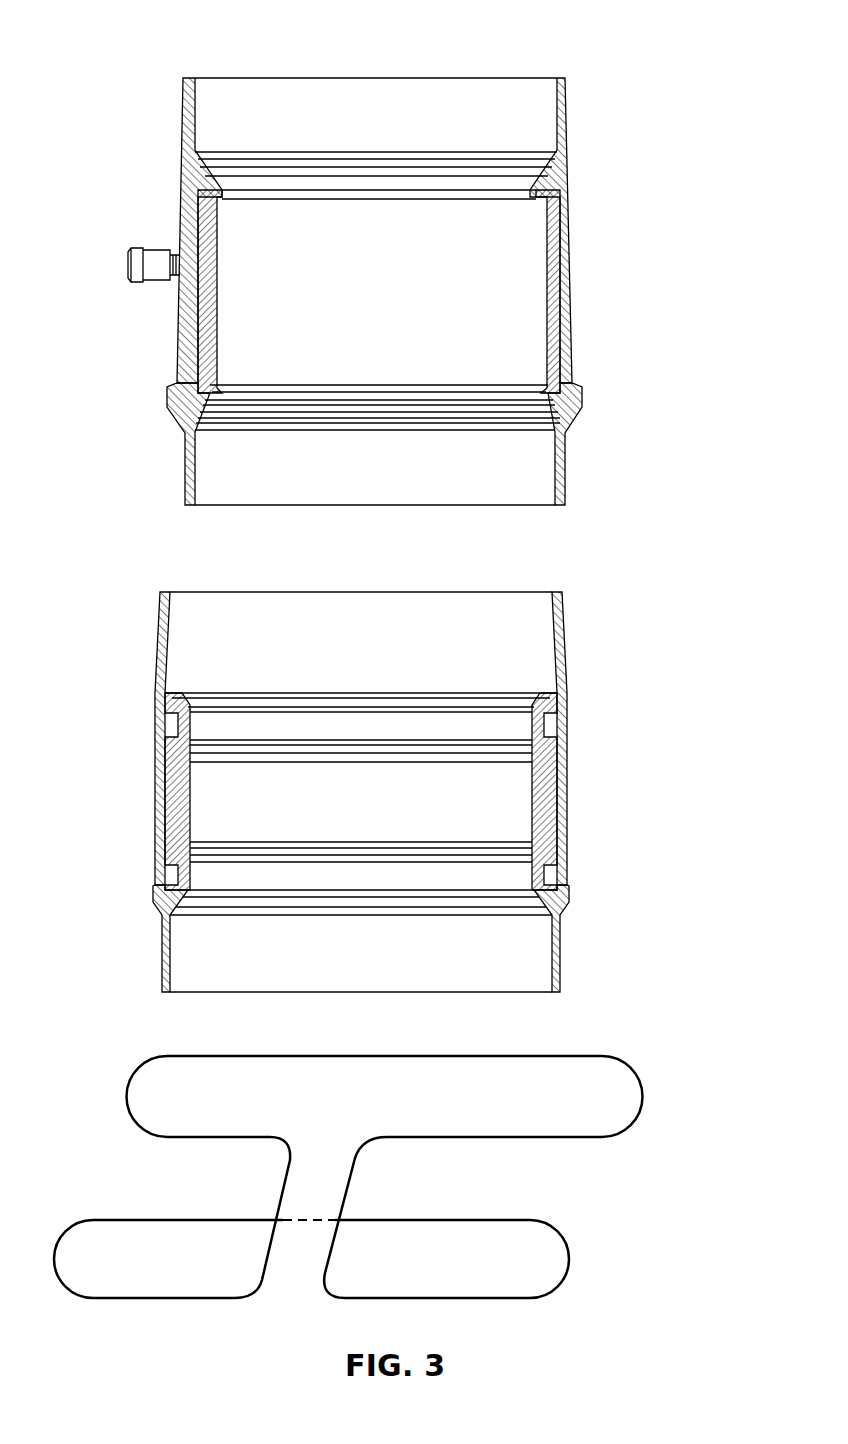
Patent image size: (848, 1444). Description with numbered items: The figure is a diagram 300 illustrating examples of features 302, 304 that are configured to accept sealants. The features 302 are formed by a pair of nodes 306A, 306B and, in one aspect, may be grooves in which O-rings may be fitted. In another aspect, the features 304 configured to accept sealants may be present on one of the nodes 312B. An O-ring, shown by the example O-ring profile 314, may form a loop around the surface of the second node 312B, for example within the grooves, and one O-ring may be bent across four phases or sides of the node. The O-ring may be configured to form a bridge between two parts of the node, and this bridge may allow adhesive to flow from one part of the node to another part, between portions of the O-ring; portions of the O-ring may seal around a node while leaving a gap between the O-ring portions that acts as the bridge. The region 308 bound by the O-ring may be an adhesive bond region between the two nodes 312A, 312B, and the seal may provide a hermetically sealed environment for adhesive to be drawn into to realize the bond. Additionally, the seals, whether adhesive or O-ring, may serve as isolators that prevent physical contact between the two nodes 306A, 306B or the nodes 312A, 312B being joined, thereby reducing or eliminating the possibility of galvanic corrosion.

The diagram 300 is at (117, 54).
The features configured to accept sealants 302 is at (421, 291).
The features configured to accept sealants 304 is at (397, 792).
The node 306A is at (181, 354).
The node 306B is at (184, 480).
The region bound by the O-ring 308 is at (569, 304).
The node 312A is at (154, 863).
The second node 312B is at (161, 961).
The O-ring profile 314 is at (137, 1063).